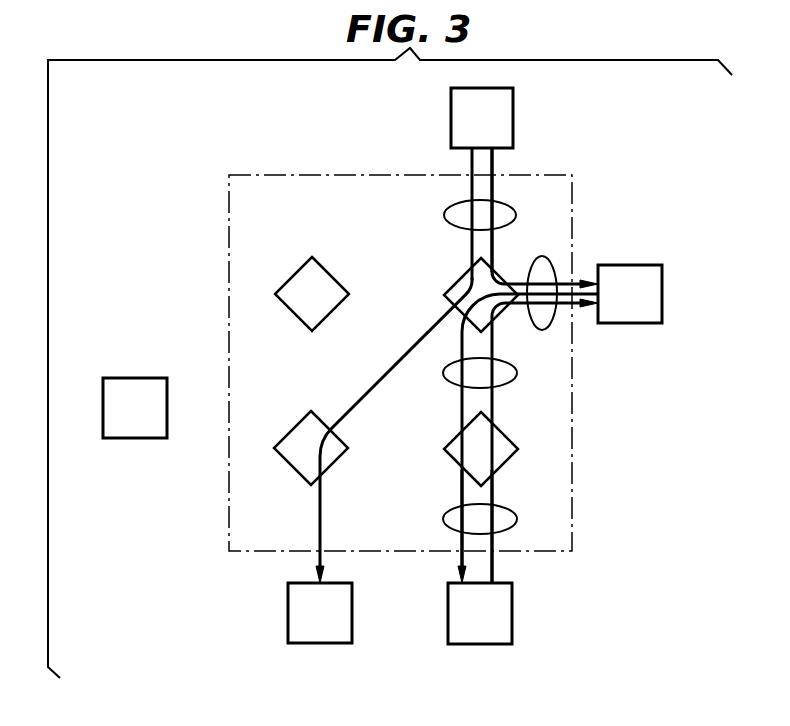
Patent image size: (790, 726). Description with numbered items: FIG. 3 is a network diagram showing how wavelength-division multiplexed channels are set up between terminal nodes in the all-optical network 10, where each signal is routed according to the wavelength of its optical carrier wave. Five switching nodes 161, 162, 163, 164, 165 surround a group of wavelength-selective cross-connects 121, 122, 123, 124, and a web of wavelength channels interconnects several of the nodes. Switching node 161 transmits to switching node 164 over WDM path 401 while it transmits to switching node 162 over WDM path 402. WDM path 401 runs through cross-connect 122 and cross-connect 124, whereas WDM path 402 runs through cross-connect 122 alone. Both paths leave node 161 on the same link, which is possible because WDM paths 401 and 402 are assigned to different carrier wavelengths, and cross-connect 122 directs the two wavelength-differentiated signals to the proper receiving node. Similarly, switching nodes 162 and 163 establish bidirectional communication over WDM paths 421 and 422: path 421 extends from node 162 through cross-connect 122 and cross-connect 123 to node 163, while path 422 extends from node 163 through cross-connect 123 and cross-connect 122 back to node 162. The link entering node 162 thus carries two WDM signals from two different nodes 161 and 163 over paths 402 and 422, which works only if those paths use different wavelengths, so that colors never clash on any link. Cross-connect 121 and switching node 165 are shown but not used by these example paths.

The all-optical network 10 is at (572, 402).
The cross-connect 121 is at (284, 283).
The cross-connect 122 is at (458, 274).
The cross-connect 123 is at (457, 435).
The cross-connect 124 is at (282, 439).
The switching node 161 is at (513, 108).
The switching node 162 is at (630, 265).
The switching node 163 is at (512, 603).
The switching node 164 is at (288, 620).
The switching node 165 is at (142, 377).
The WDM path 401 is at (471, 186).
The WDM path 402 is at (494, 160).
The WDM path 421 is at (461, 490).
The WDM path 422 is at (493, 492).